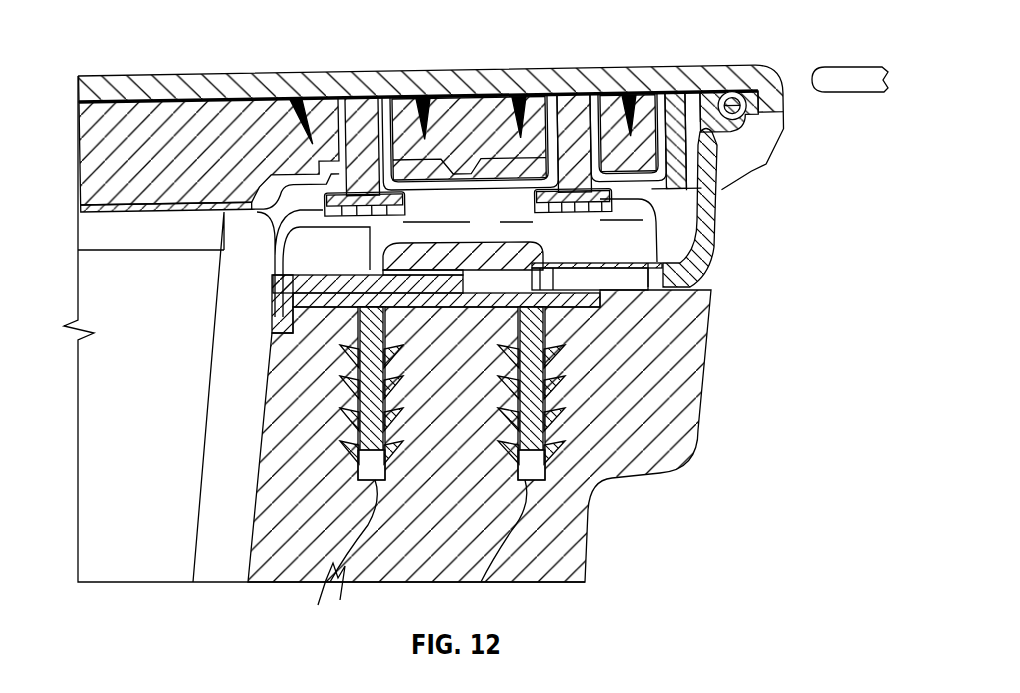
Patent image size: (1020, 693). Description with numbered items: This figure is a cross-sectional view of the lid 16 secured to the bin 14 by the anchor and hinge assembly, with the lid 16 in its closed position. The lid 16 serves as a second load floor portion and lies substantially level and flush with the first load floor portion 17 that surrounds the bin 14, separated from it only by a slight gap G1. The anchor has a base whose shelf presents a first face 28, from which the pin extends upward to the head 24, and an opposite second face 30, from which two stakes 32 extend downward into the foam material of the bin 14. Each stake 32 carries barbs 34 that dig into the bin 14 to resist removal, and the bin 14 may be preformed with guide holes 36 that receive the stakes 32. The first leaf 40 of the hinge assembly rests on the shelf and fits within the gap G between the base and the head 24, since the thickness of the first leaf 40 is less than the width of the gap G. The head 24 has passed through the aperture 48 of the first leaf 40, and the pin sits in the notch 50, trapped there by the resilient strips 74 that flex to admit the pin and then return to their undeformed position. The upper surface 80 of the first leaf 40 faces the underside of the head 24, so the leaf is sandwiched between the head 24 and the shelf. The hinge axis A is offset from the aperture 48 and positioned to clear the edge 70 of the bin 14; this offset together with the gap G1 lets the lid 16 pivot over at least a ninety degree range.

The bin 14 is at (521, 575).
The lid 16 is at (544, 70).
The first load floor portion 17 is at (856, 68).
The head 24 is at (440, 253).
The first face 28 is at (351, 280).
The second face 30 is at (438, 312).
The stakes 32 is at (358, 460).
The barbs 34 is at (352, 378).
The guide holes 36 is at (481, 582).
The first leaf 40 is at (286, 292).
The aperture 48 is at (622, 282).
The notch 50 is at (500, 342).
The edge 70 is at (703, 284).
The strips 74 is at (560, 282).
The upper surface 80 is at (641, 265).
The hinge axis A is at (722, 98).
The gap G is at (378, 262).
The gap G1 is at (800, 78).